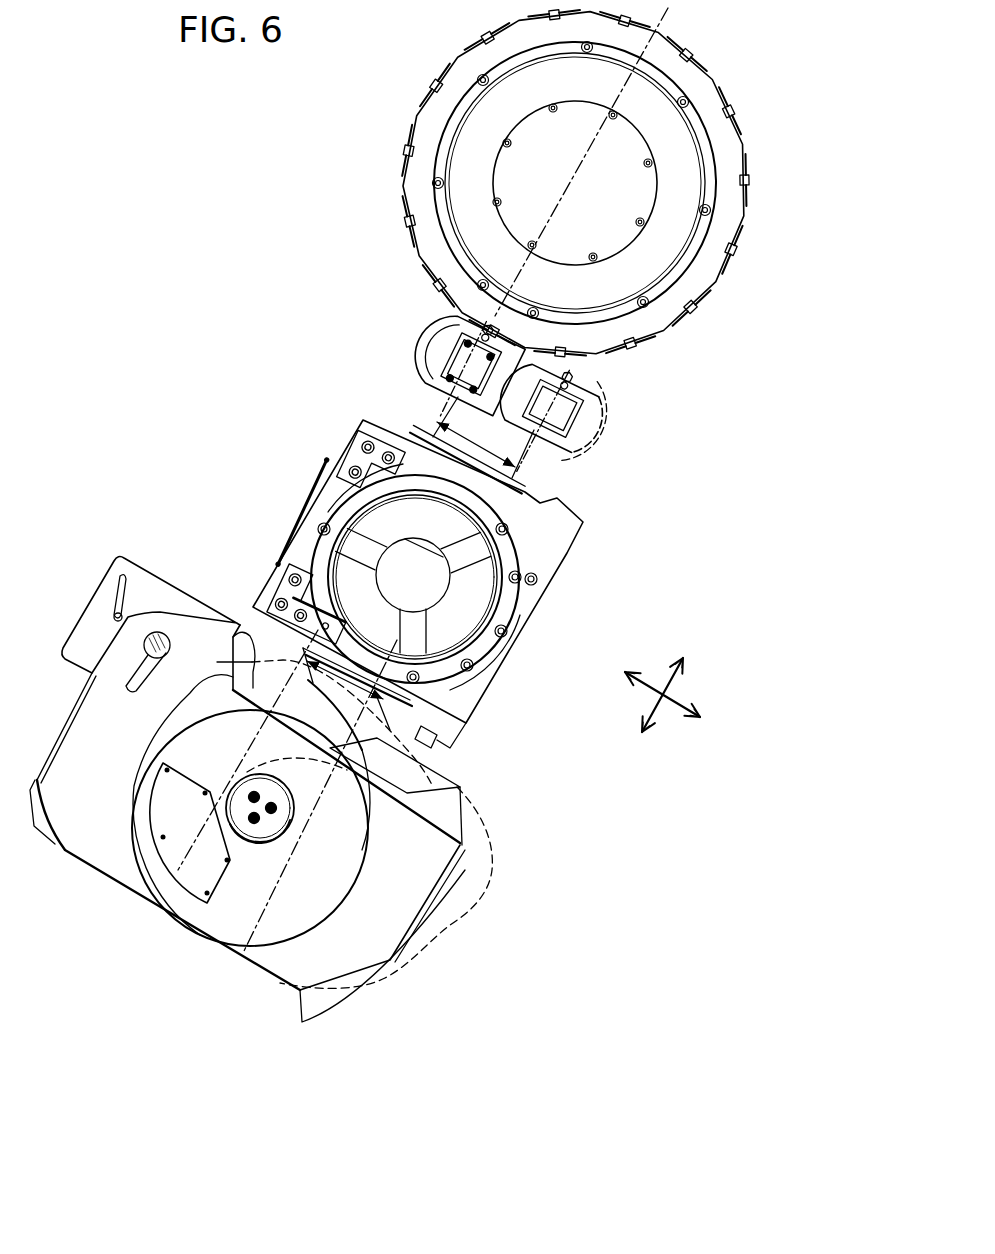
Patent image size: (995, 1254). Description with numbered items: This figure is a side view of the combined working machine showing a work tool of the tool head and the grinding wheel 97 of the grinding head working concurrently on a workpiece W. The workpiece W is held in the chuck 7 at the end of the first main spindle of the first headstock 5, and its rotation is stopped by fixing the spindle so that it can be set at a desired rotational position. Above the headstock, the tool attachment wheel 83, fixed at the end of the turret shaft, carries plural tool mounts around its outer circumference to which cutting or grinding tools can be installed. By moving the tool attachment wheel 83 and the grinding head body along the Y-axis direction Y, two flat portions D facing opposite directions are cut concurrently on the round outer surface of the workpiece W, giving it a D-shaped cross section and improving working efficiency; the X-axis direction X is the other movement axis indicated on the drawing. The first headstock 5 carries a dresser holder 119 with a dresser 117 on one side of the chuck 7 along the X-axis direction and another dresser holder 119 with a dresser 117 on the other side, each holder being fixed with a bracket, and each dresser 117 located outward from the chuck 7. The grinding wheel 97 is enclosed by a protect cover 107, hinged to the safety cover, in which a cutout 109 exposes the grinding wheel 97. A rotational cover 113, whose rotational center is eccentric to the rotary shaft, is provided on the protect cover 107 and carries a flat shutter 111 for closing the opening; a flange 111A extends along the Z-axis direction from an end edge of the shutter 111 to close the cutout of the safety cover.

The tool attachment wheel 83 is at (738, 147).
The first headstock 5 is at (298, 490).
The chuck 7 is at (482, 563).
The workpiece W is at (440, 583).
The flat portion D is at (468, 459).
The dresser 117 is at (344, 536).
The dresser holder 119 is at (335, 539).
The grinding wheel 97 is at (246, 636).
The cutout 109 is at (183, 696).
The protect cover 107 is at (103, 868).
The rotational cover 113 is at (208, 925).
The shutter 111 is at (290, 968).
The flange 111A is at (335, 1007).
The X-axis direction X is at (667, 679).
The Y-axis direction Y is at (651, 686).